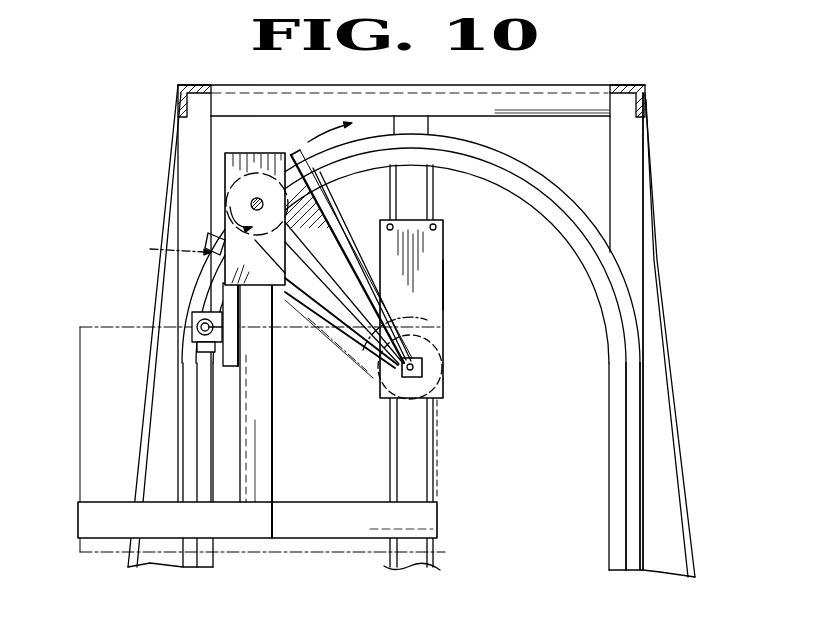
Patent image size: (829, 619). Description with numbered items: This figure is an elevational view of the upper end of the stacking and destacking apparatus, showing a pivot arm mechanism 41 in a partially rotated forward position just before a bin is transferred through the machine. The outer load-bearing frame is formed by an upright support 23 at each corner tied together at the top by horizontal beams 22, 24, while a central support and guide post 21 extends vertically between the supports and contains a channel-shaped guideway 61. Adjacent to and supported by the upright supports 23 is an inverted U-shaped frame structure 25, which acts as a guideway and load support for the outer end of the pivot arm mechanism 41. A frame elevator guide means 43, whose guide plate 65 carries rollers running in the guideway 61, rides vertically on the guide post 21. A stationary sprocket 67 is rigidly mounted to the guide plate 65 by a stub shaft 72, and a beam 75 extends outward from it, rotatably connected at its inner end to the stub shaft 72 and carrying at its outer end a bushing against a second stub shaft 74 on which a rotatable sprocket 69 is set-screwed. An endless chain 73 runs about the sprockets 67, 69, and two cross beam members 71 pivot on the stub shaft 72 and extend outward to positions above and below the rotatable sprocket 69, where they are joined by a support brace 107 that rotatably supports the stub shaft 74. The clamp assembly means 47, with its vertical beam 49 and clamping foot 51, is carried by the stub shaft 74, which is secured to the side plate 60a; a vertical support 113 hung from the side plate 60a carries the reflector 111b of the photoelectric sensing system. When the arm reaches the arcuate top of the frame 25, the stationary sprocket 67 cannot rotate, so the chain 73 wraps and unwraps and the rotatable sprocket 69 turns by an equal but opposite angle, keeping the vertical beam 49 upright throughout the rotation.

The central support and guide post 21 is at (423, 197).
The horizontal beam 22 is at (181, 95).
The upright support 23 is at (186, 140).
The horizontal beam 24 is at (527, 87).
The inverted U-shaped frame structure 25 is at (524, 168).
The pivot arm mechanism 41 is at (303, 314).
The frame elevator guide means 43 is at (448, 254).
The clamp assembly means 47 is at (278, 422).
The vertical beam 49 is at (274, 449).
The clamping foot 51 is at (86, 519).
The side plate 60a is at (227, 162).
The channel-shaped guideway 61 is at (412, 577).
The guide plate 65 is at (437, 287).
The stationary sprocket 67 is at (428, 326).
The rotatable sprocket 69 is at (165, 245).
The cross beam member 71 is at (340, 234).
The stub shaft 72 is at (422, 367).
The endless chain 73 is at (428, 318).
The stub shaft 74 is at (252, 204).
The beam 75 is at (324, 217).
The support brace 107 is at (215, 236).
The reflector 111b is at (200, 323).
The vertical support 113 is at (225, 357).